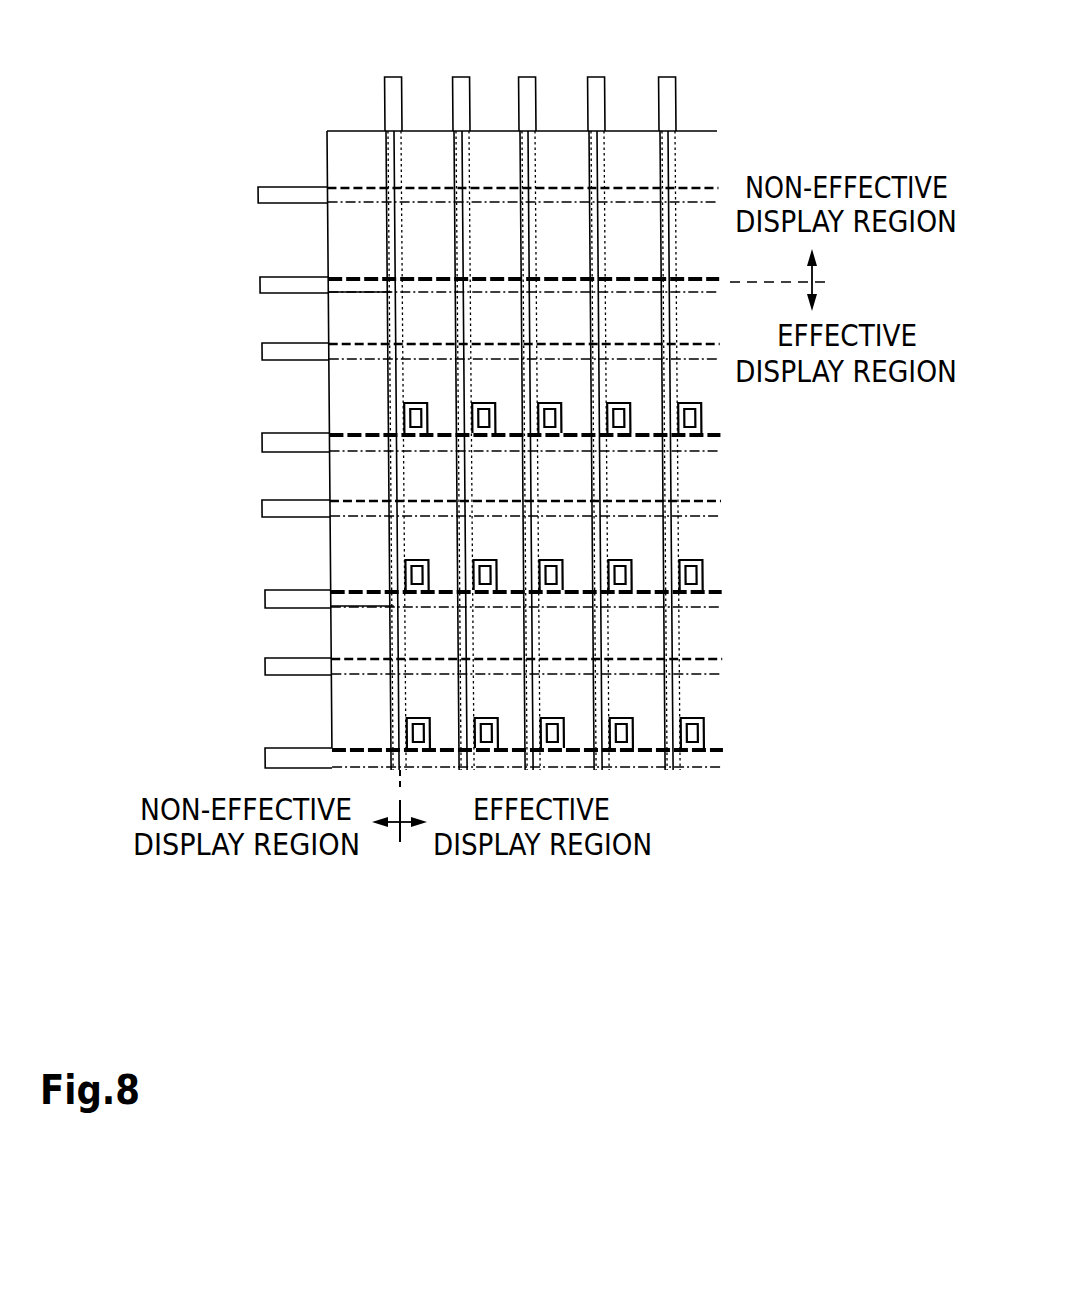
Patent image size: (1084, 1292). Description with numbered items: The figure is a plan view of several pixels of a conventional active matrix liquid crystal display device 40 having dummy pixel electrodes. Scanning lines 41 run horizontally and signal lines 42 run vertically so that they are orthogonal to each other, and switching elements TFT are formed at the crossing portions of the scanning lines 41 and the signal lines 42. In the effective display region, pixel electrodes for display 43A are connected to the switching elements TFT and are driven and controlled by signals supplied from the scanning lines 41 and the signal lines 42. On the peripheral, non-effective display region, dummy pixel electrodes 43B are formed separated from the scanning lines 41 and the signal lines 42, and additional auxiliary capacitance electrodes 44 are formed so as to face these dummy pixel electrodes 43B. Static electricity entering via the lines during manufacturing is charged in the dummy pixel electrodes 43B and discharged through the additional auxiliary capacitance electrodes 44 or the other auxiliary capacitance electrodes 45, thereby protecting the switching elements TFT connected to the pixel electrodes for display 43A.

The liquid crystal display device 40 is at (248, 31).
The scanning lines 41 is at (278, 285).
The signal lines 42 is at (390, 78).
The pixel electrodes for display 43A is at (451, 335).
The dummy pixel electrodes 43B is at (448, 178).
The additional auxiliary capacitance electrodes 44 is at (305, 193).
The auxiliary capacitance electrodes 45 is at (272, 356).
The switching elements TFT is at (700, 560).